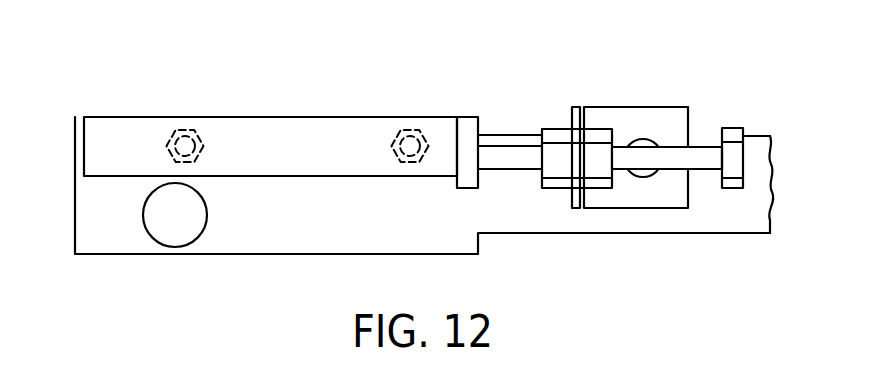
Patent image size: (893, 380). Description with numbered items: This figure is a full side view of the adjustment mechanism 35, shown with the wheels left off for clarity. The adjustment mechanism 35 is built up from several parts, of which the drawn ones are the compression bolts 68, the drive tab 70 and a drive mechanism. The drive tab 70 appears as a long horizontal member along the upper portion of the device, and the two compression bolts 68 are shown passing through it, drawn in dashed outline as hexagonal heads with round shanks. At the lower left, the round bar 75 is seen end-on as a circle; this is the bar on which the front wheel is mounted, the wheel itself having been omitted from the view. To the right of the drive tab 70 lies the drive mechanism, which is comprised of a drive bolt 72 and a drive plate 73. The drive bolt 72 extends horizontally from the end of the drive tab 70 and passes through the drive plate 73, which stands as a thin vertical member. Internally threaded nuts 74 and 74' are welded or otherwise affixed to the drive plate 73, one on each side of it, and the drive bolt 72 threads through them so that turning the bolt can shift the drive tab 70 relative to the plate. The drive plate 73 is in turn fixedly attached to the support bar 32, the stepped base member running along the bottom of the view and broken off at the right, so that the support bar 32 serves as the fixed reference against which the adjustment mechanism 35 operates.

The support bar 32 is at (725, 218).
The adjustment mechanism 35 is at (770, 107).
The compression bolts 68 is at (188, 140).
The drive tab 70 is at (248, 138).
The drive bolt 72 is at (510, 137).
The drive plate 73 is at (577, 196).
The internally threaded nut 74 is at (565, 119).
The internally threaded nut 74' is at (663, 131).
The round bar 75 is at (158, 223).